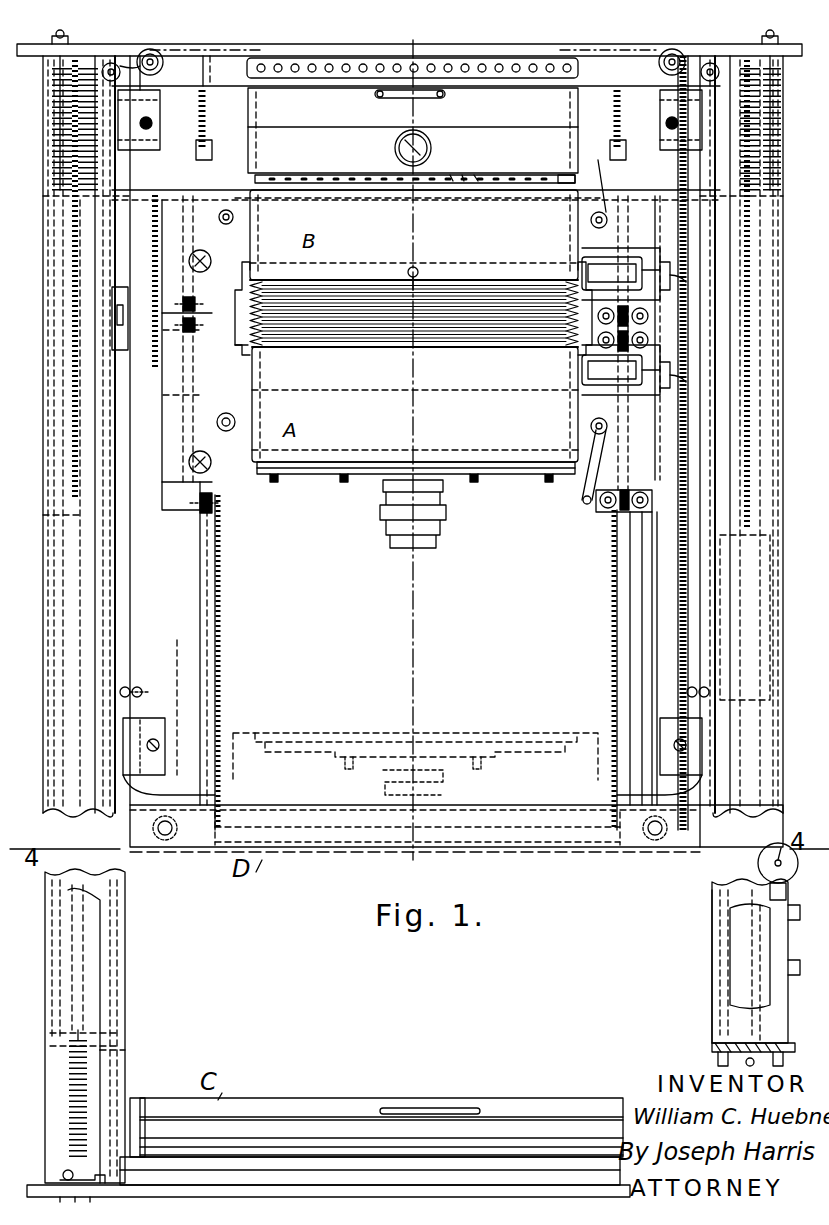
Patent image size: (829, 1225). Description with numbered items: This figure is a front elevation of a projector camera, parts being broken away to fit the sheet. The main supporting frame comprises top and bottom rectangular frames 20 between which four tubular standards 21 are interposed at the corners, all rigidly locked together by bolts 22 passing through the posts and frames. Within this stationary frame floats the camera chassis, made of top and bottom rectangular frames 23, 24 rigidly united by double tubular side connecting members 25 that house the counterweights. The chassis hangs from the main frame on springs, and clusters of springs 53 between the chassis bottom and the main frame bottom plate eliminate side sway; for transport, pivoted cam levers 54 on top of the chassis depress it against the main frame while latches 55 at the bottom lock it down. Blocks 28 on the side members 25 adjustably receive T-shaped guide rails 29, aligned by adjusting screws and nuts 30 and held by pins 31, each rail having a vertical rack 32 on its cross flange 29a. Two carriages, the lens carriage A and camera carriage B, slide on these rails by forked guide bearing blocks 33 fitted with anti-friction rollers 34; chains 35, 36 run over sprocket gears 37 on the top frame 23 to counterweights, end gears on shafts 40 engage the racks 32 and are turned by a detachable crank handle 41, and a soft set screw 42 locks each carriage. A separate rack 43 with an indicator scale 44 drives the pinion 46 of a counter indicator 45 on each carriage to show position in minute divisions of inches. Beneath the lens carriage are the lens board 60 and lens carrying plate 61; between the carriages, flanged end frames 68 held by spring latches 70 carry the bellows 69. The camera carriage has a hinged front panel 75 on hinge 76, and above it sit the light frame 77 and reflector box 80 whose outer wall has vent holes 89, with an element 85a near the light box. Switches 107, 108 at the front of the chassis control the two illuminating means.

The top and bottom rectangular frames 20 is at (219, 50).
The tubular standards 21 is at (105, 952).
The bolts 22 is at (60, 44).
The top rectangular frame of chassis 23 is at (232, 80).
The bottom rectangular frame of chassis 24 is at (178, 1152).
The side connecting members 25 is at (205, 625).
The blocks 28 is at (660, 722).
The guide rails 29 is at (204, 592).
The cross flanges 29a is at (210, 607).
The adjusting screws and nuts 30 is at (143, 690).
The pins 31 is at (160, 744).
The rack 32 is at (222, 573).
The guide bearing block 33 is at (220, 508).
The anti-friction rollers 34 is at (215, 500).
The chain 35 is at (163, 345).
The chain 36 is at (150, 160).
The sprocket gears 37 is at (156, 52).
The shaft 40 is at (236, 422).
The operating crank handle 41 is at (583, 502).
The set screw 42 is at (209, 258).
The rack 43 is at (680, 561).
The indicator scale 44 is at (652, 578).
The counter indicator 45 is at (580, 266).
The drive pinion 46 is at (682, 278).
The springs 53 is at (86, 1078).
The pivoted cam levers 54 is at (116, 65).
The latches 55 is at (62, 1174).
The lens board 60 is at (310, 476).
The lens carrying plate 61 is at (336, 490).
The flanged end frames 68 is at (327, 265).
The bellows 69 is at (383, 343).
The spring latches 70 is at (578, 352).
The front wall or panel 75 is at (423, 276).
The hinge 76 is at (264, 176).
The light frame 77 is at (365, 148).
The reflector box 80 is at (413, 130).
The clip 85a is at (470, 176).
The vent holes 89 is at (400, 66).
The electric switch 107 is at (736, 648).
The control switch 108 is at (122, 310).